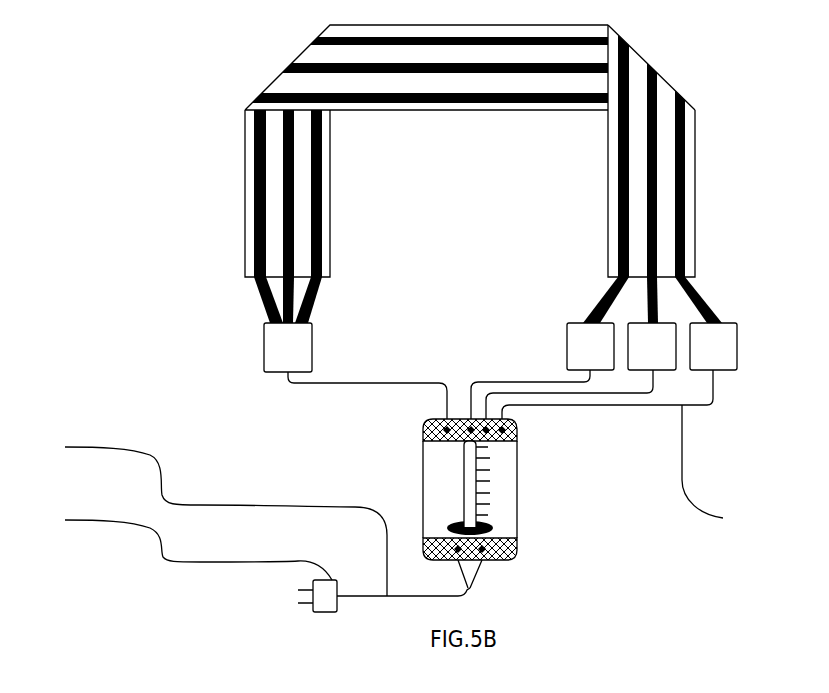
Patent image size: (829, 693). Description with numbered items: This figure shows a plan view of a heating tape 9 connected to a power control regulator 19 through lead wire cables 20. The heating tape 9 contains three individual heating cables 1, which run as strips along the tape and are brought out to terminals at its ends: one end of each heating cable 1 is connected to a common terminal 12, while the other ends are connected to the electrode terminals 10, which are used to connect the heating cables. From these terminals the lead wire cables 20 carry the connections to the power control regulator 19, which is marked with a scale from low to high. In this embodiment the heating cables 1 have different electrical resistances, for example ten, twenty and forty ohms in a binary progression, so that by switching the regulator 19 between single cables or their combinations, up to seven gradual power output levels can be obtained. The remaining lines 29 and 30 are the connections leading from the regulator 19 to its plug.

The heating cables 1 is at (255, 238).
The heating tape 9 is at (254, 160).
The common terminal 12 is at (264, 350).
The electrode terminals 10 is at (737, 345).
The power control regulator 19 is at (423, 461).
The lead wire cables 20 is at (715, 468).
The wire 29 is at (210, 516).
The power cord plug 30 is at (251, 560).